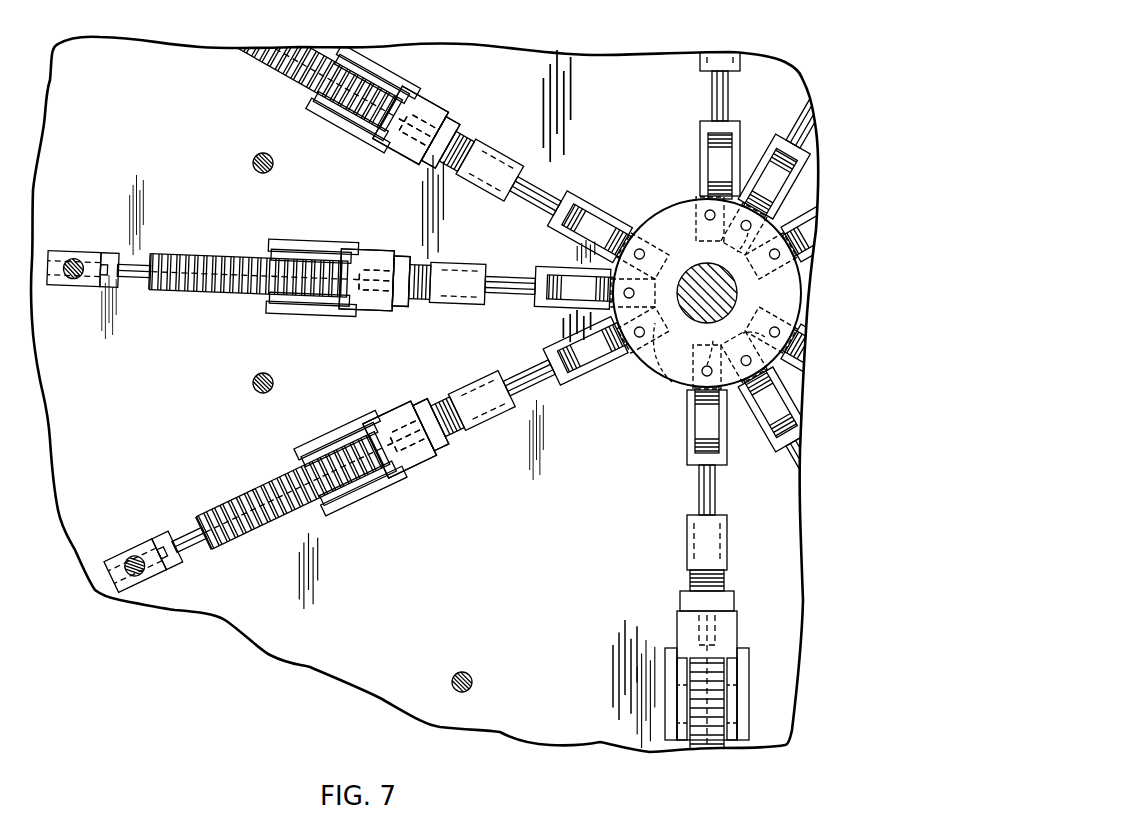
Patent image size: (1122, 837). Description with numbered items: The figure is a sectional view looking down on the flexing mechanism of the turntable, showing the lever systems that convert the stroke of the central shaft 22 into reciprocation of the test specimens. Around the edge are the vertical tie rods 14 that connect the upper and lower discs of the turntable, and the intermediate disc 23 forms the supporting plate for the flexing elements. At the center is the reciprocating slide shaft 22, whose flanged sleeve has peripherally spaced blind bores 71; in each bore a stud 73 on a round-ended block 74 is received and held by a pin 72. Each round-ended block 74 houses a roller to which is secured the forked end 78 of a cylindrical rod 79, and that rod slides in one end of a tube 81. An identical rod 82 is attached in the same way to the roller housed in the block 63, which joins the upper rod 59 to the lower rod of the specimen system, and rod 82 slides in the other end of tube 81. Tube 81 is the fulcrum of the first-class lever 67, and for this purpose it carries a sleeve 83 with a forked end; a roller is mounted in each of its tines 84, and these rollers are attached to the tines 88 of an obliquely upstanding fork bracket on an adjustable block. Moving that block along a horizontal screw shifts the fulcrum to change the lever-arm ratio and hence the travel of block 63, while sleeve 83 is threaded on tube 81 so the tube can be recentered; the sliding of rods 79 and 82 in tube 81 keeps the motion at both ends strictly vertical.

The tie rod 14 is at (471, 679).
The shaft 22 is at (705, 271).
The intermediate disc 23 is at (385, 655).
The upper rod 59 is at (140, 573).
The block 63 is at (143, 540).
The first-class lever 67 is at (752, 673).
The blind bore 71 is at (680, 372).
The pin 72 is at (743, 333).
The stud 73 is at (650, 338).
The round-ended block 74 is at (767, 417).
The forked end 78 is at (688, 451).
The cylindrical rod 79 is at (783, 473).
The tube 81 is at (717, 583).
The rod 82 is at (193, 550).
The sleeve 83 is at (737, 622).
The tine 84 is at (683, 726).
The tine 88 is at (745, 692).